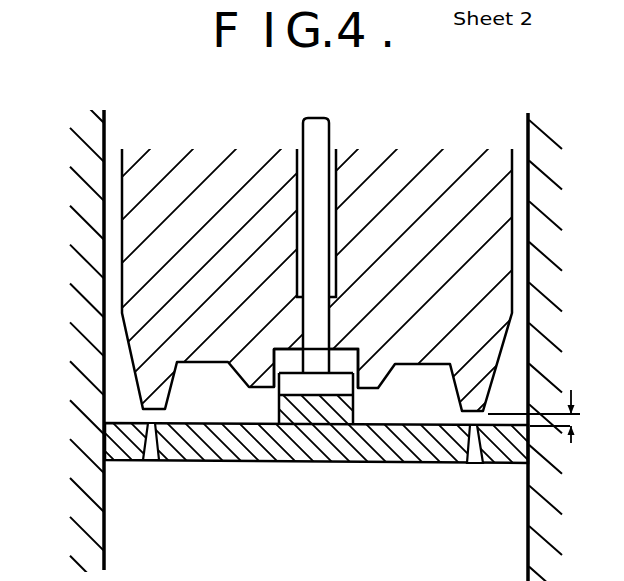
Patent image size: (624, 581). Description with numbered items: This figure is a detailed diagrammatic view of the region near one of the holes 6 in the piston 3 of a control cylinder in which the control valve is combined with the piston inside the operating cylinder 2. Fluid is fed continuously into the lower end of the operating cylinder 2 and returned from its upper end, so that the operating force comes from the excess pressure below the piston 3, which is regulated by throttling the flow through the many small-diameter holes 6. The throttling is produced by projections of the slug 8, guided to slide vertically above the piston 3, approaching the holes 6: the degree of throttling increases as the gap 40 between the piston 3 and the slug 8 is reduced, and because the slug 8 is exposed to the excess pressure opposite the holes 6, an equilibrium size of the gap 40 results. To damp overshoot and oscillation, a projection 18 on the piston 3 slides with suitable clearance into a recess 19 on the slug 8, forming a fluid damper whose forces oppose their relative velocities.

The operating cylinder 2 is at (537, 535).
The piston 3 is at (222, 440).
The holes 6 is at (472, 443).
The slug 8 is at (153, 245).
The projection 18 is at (300, 410).
The recess 19 is at (281, 362).
The gap 40 is at (570, 425).